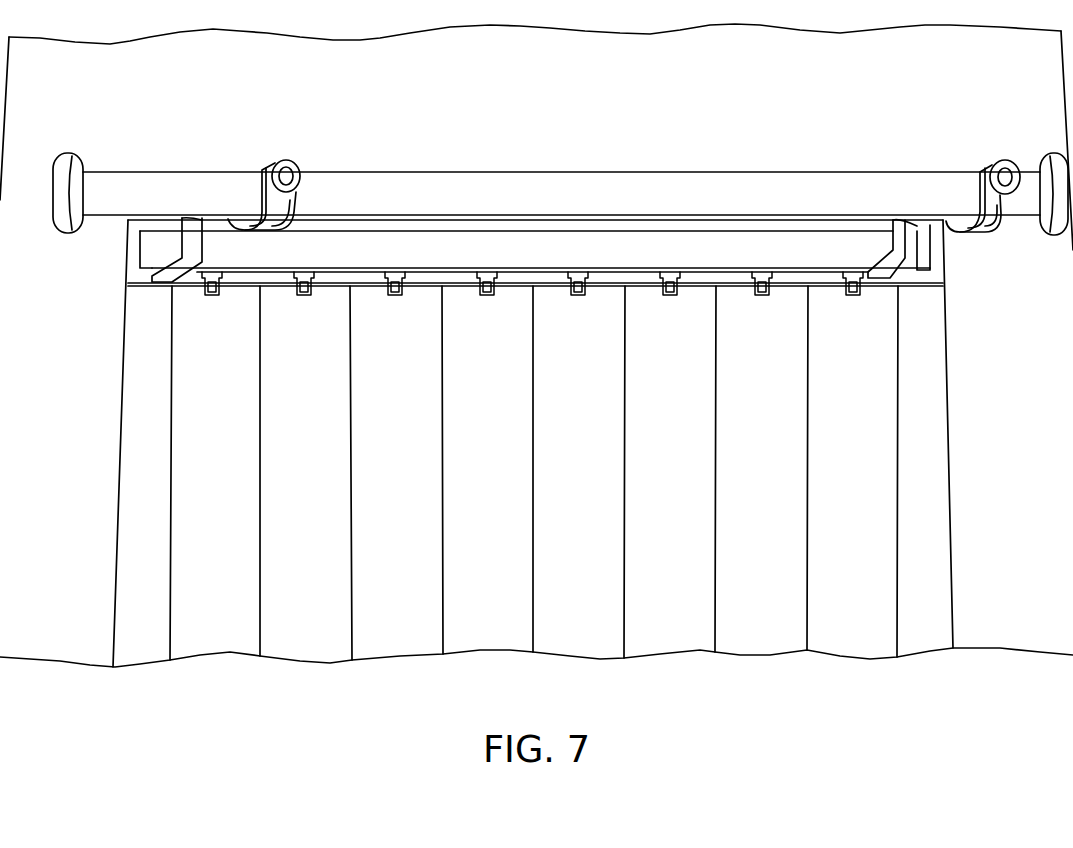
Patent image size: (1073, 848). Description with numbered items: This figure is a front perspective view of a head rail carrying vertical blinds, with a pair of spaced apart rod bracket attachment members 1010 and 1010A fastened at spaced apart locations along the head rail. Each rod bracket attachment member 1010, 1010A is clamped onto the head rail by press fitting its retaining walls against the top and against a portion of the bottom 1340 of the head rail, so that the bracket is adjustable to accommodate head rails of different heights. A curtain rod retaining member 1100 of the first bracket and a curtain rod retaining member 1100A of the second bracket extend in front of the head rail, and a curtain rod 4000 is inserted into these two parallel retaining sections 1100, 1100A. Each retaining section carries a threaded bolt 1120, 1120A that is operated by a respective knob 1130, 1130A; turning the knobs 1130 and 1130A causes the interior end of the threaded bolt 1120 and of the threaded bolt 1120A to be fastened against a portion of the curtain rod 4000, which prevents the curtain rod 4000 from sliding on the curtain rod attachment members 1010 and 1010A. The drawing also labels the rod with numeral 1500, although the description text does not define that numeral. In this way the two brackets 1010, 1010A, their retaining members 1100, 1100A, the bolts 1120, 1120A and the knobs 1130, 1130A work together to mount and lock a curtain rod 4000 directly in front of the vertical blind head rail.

The rod bracket attachment member 1010 is at (282, 217).
The rod bracket attachment member 1010A is at (922, 184).
The curtain rod retaining member 1100 is at (272, 213).
The curtain rod retaining member 1100A is at (990, 222).
The threaded bolt 1120 is at (296, 198).
The threaded bolt 1120A is at (973, 190).
The knob 1130 is at (293, 162).
The knob 1130A is at (993, 162).
The bottom of the head rail 1340 is at (430, 267).
The curtain rod 1500 is at (537, 168).
The curtain rod 4000 is at (617, 207).